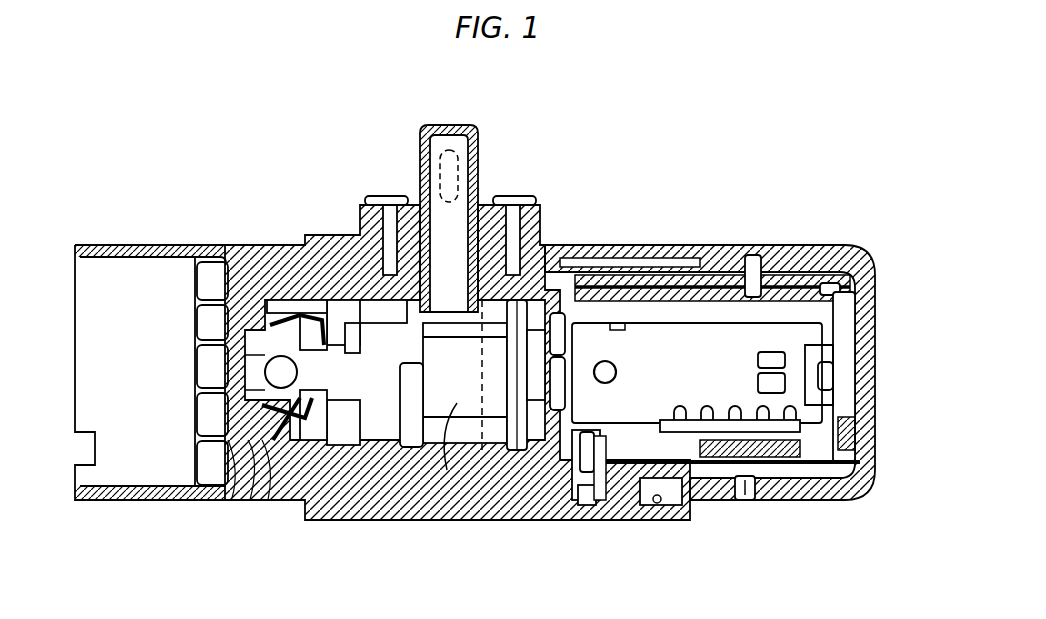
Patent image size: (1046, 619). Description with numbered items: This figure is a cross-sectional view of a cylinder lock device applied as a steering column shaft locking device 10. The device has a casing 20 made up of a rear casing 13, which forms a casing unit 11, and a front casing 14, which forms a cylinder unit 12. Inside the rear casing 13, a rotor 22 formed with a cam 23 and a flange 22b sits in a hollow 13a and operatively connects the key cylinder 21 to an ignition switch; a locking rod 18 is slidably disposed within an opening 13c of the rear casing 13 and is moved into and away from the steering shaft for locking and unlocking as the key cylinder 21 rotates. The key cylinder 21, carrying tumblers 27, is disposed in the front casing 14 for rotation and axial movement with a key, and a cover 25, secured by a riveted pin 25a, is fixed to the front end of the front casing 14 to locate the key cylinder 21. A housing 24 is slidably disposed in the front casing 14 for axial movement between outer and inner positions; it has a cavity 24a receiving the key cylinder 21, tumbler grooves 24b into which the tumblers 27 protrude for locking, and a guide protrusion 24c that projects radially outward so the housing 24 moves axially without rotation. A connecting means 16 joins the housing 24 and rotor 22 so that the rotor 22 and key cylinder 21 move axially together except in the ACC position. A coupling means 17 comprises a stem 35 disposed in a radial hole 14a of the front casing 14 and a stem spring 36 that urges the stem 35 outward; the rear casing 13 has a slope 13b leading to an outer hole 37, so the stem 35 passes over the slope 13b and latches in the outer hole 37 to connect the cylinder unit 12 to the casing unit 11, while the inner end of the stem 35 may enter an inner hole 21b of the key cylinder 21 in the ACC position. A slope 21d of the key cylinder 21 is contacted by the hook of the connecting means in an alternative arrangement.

The steering column shaft locking device 10 is at (255, 178).
The casing unit 11 is at (298, 218).
The cylinder unit 12 is at (833, 218).
The rear casing 13 is at (334, 237).
The hollow 13a is at (168, 358).
The slope 13b is at (645, 507).
The opening 13c is at (266, 487).
The front casing 14 is at (872, 485).
The hole 14a is at (528, 463).
The connecting means 16 is at (560, 250).
The coupling means 17 is at (605, 540).
The locking rod 18 is at (229, 492).
The casing 20 is at (218, 243).
The key cylinder 21 is at (700, 335).
The inner hole 21b is at (618, 378).
The slope 21d is at (857, 268).
The rotor 22 is at (477, 458).
The flange 22b is at (412, 458).
The cam 23 is at (370, 452).
The housing 24 is at (655, 265).
The cavity 24a is at (606, 262).
The tumbler grooves 24b is at (752, 262).
The guide protrusion 24c is at (738, 492).
The cover 25 is at (877, 298).
The pin 25a is at (752, 500).
The tumblers 27 is at (705, 442).
The stem 35 is at (585, 522).
The stem spring 36 is at (540, 457).
The outer hole 37 is at (572, 472).